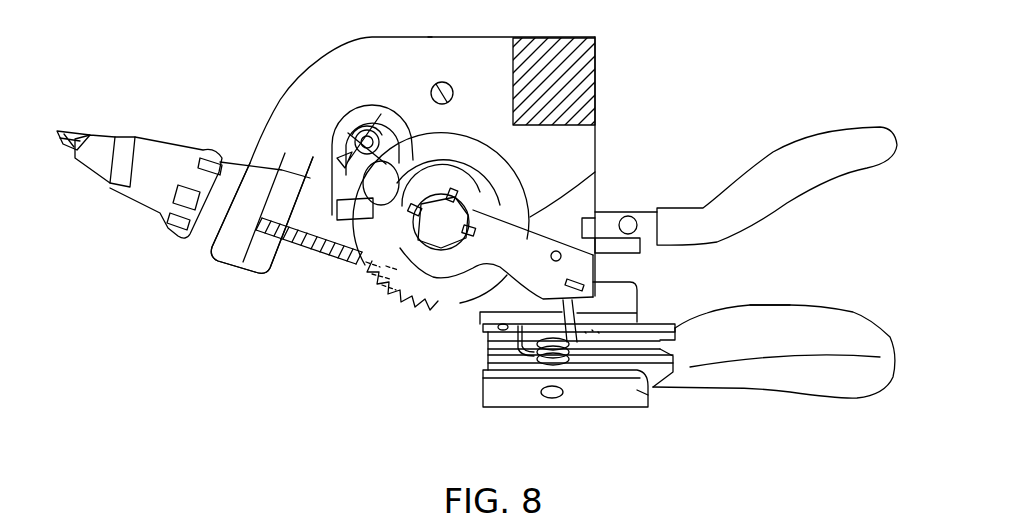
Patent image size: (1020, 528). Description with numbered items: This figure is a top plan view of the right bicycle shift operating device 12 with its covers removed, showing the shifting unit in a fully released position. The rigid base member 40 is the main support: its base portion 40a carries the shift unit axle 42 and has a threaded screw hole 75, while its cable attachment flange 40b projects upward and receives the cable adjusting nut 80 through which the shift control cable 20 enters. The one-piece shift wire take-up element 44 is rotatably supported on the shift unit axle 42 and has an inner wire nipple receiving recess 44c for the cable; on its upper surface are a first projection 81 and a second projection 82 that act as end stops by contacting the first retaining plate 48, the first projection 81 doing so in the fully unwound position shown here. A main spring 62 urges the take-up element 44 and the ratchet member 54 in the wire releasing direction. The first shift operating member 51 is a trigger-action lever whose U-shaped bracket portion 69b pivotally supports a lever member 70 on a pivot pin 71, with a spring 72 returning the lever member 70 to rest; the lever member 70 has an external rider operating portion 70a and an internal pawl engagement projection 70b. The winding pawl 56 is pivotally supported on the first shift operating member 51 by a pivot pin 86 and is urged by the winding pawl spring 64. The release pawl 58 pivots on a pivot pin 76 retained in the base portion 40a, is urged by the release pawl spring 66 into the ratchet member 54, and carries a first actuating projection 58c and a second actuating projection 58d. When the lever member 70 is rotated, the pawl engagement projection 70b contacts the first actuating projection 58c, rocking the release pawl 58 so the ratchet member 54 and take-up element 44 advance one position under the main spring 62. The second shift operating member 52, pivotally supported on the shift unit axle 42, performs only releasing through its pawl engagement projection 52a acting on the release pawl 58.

The bicycle shift operating device 12 is at (265, 386).
The shift control cable 20 is at (103, 130).
The base member 40 is at (307, 62).
The base portion 40a is at (427, 60).
The cable attachment flange 40b is at (233, 243).
The shift unit axle 42 is at (440, 223).
The shift wire take-up element 44 is at (514, 161).
The inner wire nipple receiving recess 44c is at (383, 288).
The first retaining plate 48 is at (463, 280).
The first shift operating member 51 is at (504, 412).
The second shift operating member 52 is at (806, 134).
The pawl engagement projection 52a is at (640, 218).
The ratchet member 54 is at (432, 303).
The winding pawl 56 is at (328, 182).
The release pawl 58 is at (583, 312).
The first actuating projection 58c is at (563, 320).
The second actuating projection 58d is at (643, 250).
The main spring 62 is at (460, 195).
The winding pawl spring 64 is at (393, 122).
The release pawl spring 66 is at (582, 282).
The bracket portion 69b is at (627, 402).
The lever member 70 is at (840, 300).
The external rider operating portion 70a is at (783, 306).
The internal pawl engagement projection 70b is at (593, 336).
The pivot pin 71 is at (552, 398).
The spring 72 is at (568, 360).
The threaded screw hole 75 is at (443, 87).
The pivot pin 76 is at (558, 252).
The cable adjusting nut 80 is at (133, 200).
The first projection 81 is at (537, 200).
The second projection 82 is at (381, 185).
The pivot pin 86 is at (364, 138).